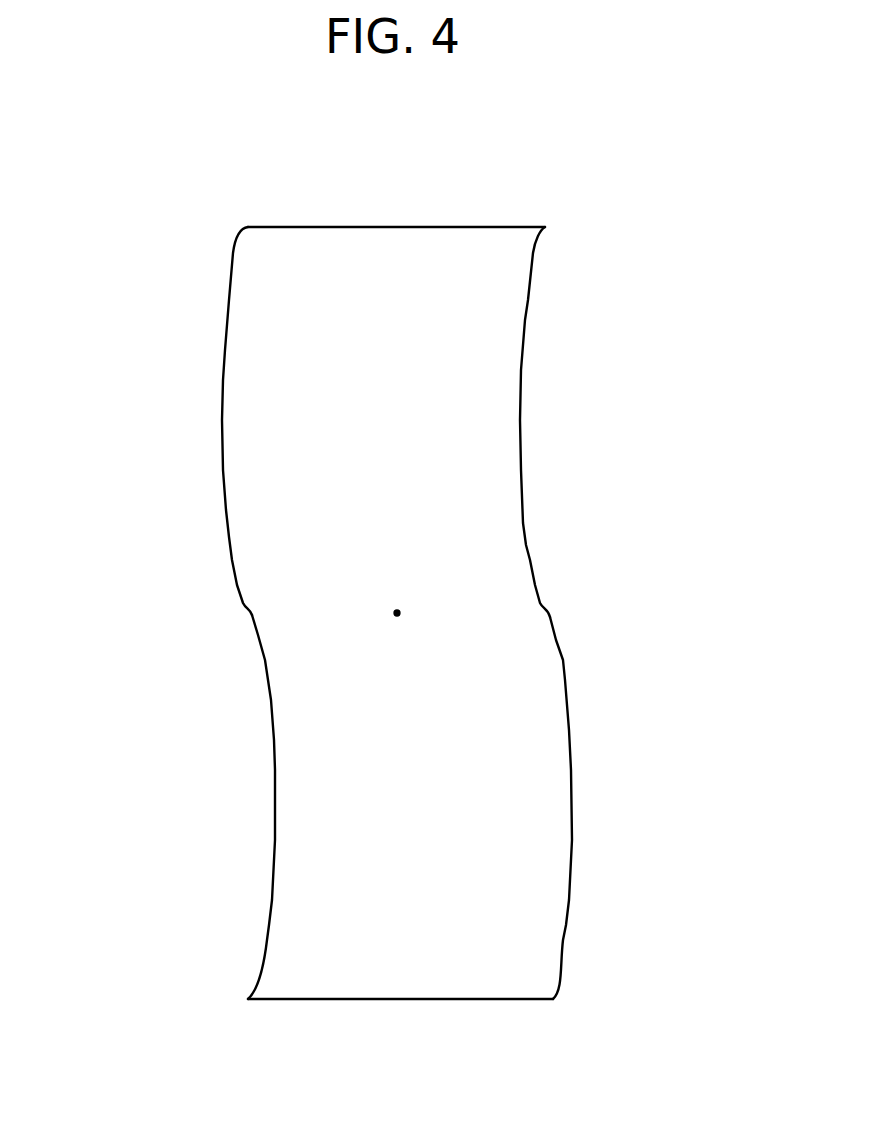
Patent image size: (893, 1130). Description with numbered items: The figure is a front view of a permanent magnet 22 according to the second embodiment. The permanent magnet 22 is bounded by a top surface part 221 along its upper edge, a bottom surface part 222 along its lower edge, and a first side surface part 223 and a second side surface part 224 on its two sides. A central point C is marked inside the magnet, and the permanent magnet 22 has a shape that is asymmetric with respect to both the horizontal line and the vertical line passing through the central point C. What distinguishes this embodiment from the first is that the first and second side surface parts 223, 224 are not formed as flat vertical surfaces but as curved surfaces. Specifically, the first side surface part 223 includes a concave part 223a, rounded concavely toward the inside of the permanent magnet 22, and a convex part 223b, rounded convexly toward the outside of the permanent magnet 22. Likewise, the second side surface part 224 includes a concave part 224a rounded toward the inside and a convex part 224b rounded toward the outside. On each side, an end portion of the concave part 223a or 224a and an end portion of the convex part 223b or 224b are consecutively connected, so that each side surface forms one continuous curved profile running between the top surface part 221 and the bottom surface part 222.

The permanent magnet 22 is at (433, 189).
The top surface part 221 is at (398, 227).
The bottom surface part 222 is at (413, 999).
The first side surface part 223 is at (100, 543).
The concave part 223a is at (270, 702).
The convex part 223b is at (228, 553).
The second side surface part 224 is at (690, 548).
The concave part 224a is at (524, 524).
The convex part 224b is at (566, 673).
The central point C is at (397, 613).